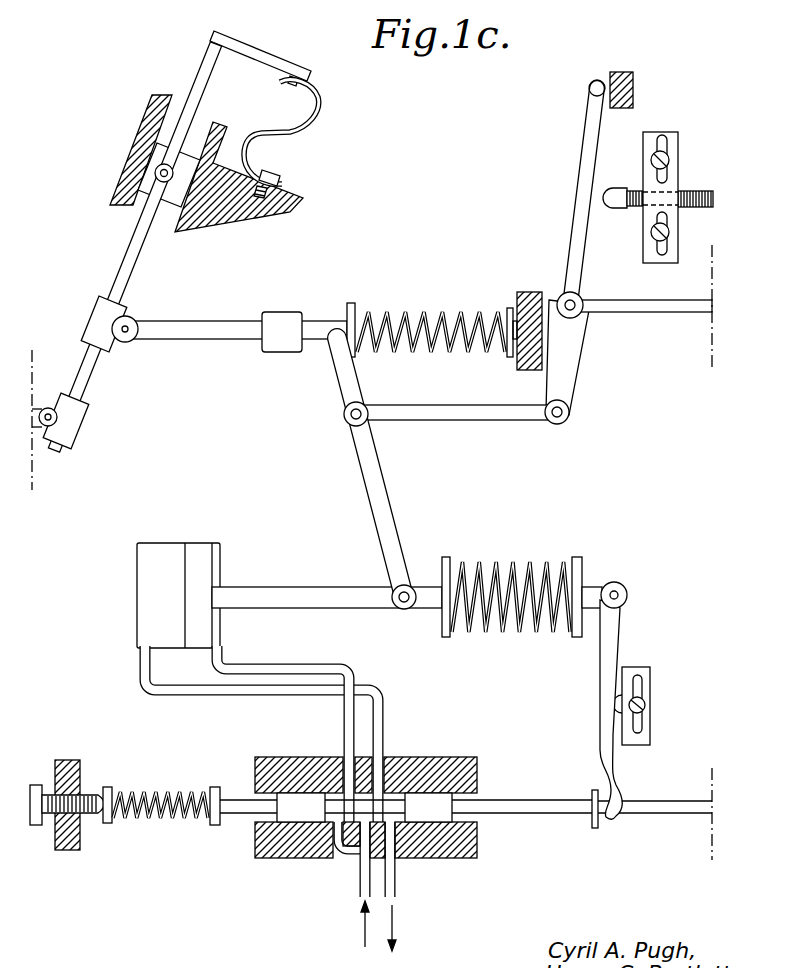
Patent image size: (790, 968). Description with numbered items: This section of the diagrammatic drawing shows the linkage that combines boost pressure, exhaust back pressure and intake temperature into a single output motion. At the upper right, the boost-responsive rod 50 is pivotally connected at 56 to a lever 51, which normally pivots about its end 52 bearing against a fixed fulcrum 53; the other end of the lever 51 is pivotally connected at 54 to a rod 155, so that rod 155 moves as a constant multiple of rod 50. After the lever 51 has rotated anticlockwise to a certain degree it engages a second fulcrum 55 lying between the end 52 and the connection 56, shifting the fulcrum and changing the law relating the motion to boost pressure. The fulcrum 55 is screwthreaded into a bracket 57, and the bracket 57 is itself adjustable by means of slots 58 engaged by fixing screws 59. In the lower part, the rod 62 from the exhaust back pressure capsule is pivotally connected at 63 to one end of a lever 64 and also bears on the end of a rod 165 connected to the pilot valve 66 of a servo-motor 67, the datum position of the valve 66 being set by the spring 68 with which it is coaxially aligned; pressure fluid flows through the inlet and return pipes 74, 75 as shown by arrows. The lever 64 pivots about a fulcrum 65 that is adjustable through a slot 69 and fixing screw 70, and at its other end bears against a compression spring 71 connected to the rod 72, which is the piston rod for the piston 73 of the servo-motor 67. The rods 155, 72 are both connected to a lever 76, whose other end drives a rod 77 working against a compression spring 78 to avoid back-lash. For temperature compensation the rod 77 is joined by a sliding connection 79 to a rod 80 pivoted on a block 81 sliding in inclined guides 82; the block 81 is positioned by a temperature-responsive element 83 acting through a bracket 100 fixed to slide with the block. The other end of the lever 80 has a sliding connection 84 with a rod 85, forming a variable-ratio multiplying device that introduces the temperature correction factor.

The bracket 100 is at (270, 56).
The temperature-responsive element 83 is at (317, 117).
The block 81 is at (156, 167).
The guides 82 is at (140, 164).
The rod 80 is at (129, 247).
The sliding connection 79 is at (128, 308).
The rod 77 is at (313, 320).
The compression spring 78 is at (447, 290).
The rod 85 is at (47, 398).
The sliding connection 84 is at (82, 417).
The lever 76 is at (362, 490).
The rod 155 is at (485, 419).
The pivotal connection 54 is at (569, 413).
The pivotal connection 56 is at (565, 300).
The lever 51 is at (572, 232).
The lever end 52 is at (596, 95).
The fixed fulcrum 53 is at (633, 61).
The adjustable fulcrum 55 is at (617, 190).
The bracket 57 is at (645, 167).
The slots 58 is at (662, 135).
The fixing screws 59 is at (656, 157).
The rod 50 is at (696, 301).
The servo-motor 67 is at (168, 525).
The piston 73 is at (193, 560).
The piston rod 72 is at (285, 586).
The compression spring 71 is at (503, 558).
The fulcrum 65 is at (616, 699).
The lever 64 is at (600, 713).
The fixing screw 70 is at (646, 702).
The slot 69 is at (639, 727).
The rod 62 is at (680, 814).
The pivotal connection 63 is at (609, 820).
The rod 165 is at (543, 814).
The pilot valve 66 is at (432, 823).
The spring 68 is at (147, 825).
The inlet pipe 74 is at (360, 883).
The return pipe 75 is at (397, 883).